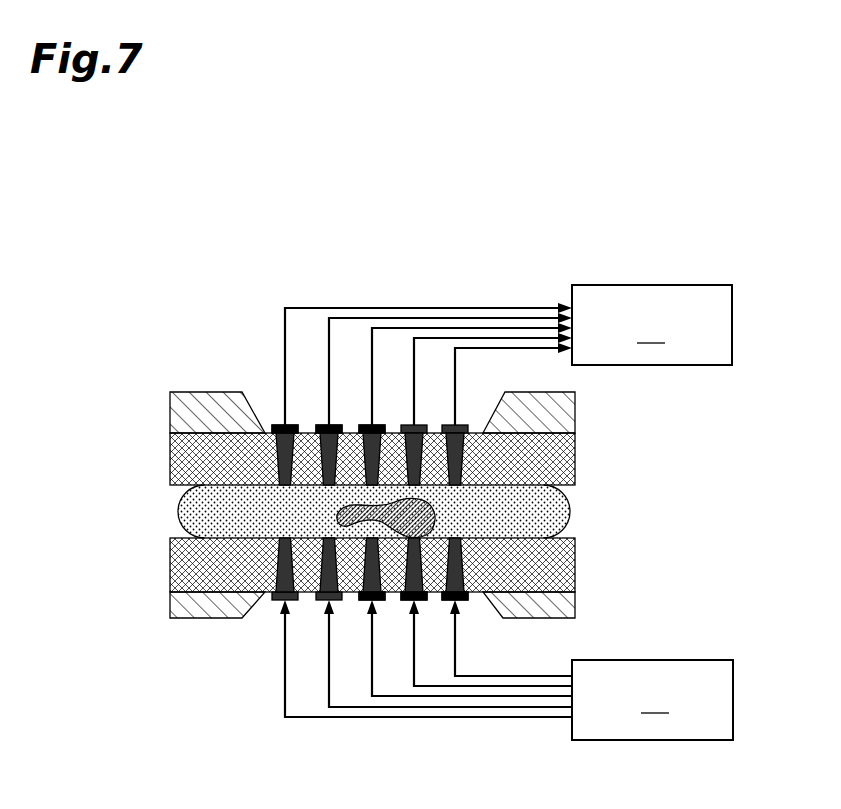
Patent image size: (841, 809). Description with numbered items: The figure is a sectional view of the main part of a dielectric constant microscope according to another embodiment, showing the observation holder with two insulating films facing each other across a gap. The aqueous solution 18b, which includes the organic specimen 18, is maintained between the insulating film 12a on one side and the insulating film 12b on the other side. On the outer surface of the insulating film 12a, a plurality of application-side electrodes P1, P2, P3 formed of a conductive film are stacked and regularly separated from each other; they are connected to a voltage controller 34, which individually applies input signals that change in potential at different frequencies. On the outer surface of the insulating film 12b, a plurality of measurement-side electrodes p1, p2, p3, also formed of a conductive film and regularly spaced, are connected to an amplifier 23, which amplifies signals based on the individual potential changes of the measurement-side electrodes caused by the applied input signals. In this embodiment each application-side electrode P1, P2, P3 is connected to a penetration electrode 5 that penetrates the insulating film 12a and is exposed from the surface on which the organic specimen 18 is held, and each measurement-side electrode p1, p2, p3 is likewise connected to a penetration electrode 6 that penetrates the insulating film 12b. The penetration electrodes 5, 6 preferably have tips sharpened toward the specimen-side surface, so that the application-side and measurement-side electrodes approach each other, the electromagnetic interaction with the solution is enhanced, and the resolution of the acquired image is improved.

The penetration electrode 5 is at (276, 589).
The penetration electrode 6 is at (465, 443).
The insulating film 12a is at (575, 565).
The insulating film 12b is at (575, 458).
The organic specimen 18 is at (436, 520).
The aqueous solution 18b is at (178, 517).
The amplifier 23 is at (508, 355).
The voltage controller 34 is at (506, 670).
The measurement-side electrode p1 is at (273, 424).
The measurement-side electrode p2 is at (318, 424).
The measurement-side electrode p3 is at (362, 424).
The application-side electrode P1 is at (461, 601).
The application-side electrode P2 is at (421, 601).
The application-side electrode P3 is at (379, 601).